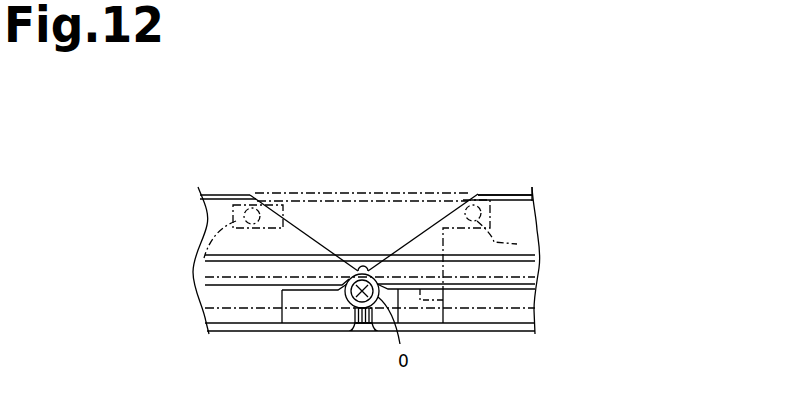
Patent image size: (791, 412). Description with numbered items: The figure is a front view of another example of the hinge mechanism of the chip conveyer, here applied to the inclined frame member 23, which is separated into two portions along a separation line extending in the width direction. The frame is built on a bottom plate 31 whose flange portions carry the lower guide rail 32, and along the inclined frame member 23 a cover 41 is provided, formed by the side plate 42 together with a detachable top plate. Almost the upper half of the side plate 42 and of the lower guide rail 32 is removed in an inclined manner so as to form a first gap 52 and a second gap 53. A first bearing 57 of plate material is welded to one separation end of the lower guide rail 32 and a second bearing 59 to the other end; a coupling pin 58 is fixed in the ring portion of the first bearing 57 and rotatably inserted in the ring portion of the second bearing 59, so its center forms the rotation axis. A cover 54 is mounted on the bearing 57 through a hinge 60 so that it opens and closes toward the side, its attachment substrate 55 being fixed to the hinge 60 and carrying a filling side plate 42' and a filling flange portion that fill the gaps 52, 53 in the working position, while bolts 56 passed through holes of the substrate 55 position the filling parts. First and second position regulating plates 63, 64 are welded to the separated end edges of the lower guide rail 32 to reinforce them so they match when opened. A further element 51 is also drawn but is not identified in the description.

The inclined frame member 23 is at (498, 182).
The bottom plate 31 is at (222, 328).
The lower guide rail 32 is at (266, 308).
The cover 41 is at (219, 188).
The side plate 42 is at (366, 260).
The filling side plate 42' is at (286, 171).
The cover line 51 is at (366, 186).
The first gap 52 is at (287, 200).
The second gap 53 is at (450, 200).
The cover 54 is at (389, 185).
The attachment substrate 55 is at (534, 201).
The bolts 56 is at (200, 272).
The first bearing 57 is at (415, 285).
The coupling pin 58 is at (370, 273).
The second bearing 59 is at (322, 282).
The hinge 60 is at (426, 302).
The first position regulating plate 63 is at (348, 332).
The second position regulating plate 64 is at (374, 332).